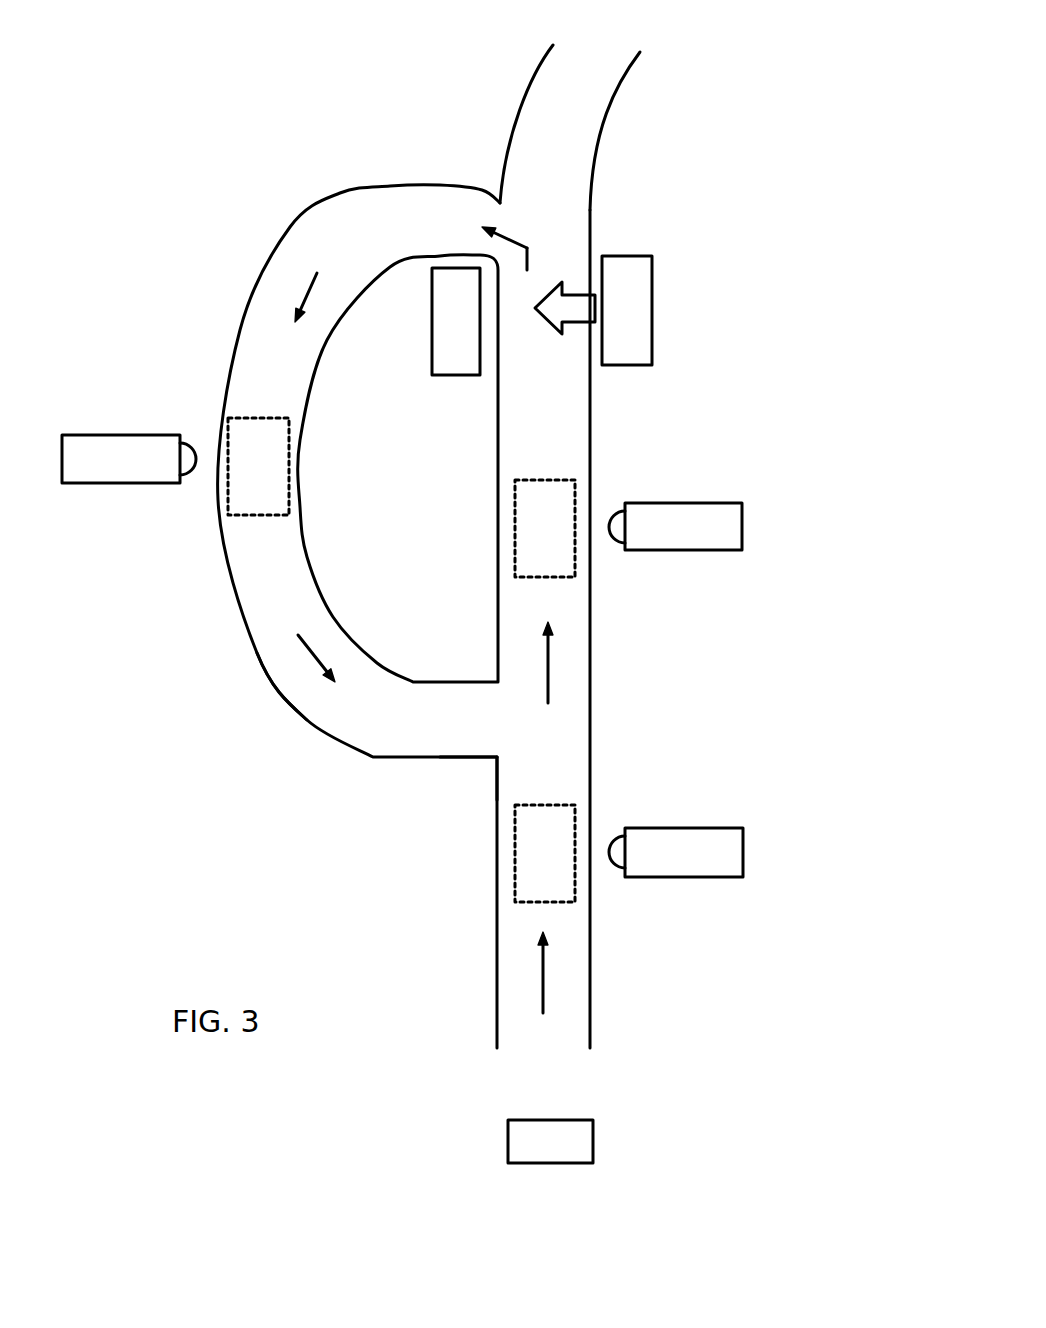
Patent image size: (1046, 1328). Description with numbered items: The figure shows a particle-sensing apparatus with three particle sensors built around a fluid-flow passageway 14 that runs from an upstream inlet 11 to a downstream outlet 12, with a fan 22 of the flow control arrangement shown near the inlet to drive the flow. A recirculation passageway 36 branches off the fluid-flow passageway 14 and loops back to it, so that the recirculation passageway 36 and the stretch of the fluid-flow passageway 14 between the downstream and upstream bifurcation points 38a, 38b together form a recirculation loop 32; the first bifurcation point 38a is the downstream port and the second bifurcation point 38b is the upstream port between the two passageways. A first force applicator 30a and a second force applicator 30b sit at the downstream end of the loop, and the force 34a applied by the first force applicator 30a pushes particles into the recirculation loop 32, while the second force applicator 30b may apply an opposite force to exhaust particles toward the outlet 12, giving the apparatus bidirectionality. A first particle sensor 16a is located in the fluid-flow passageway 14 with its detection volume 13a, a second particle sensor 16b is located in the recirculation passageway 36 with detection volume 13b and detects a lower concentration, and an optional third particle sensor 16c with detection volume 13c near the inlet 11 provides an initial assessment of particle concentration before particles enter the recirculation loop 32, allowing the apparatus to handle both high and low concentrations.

The upstream inlet 11 is at (565, 1069).
The downstream outlet 12 is at (622, 52).
The detection volume 13a is at (552, 517).
The detection volume 13b is at (253, 443).
The detection volume 13c is at (552, 842).
The fluid-flow passageway 14 is at (580, 680).
The first particle sensor 16a is at (720, 517).
The second particle sensor 16b is at (145, 467).
The third particle sensor 16c is at (720, 842).
The fan 22 is at (593, 1140).
The first force applicator 30a is at (637, 313).
The second force applicator 30b is at (462, 352).
The recirculation loop 32 is at (249, 193).
The force 34a is at (565, 310).
The recirculation passageway 36 is at (255, 652).
The first bifurcation point 38a is at (460, 228).
The second bifurcation point 38b is at (492, 717).